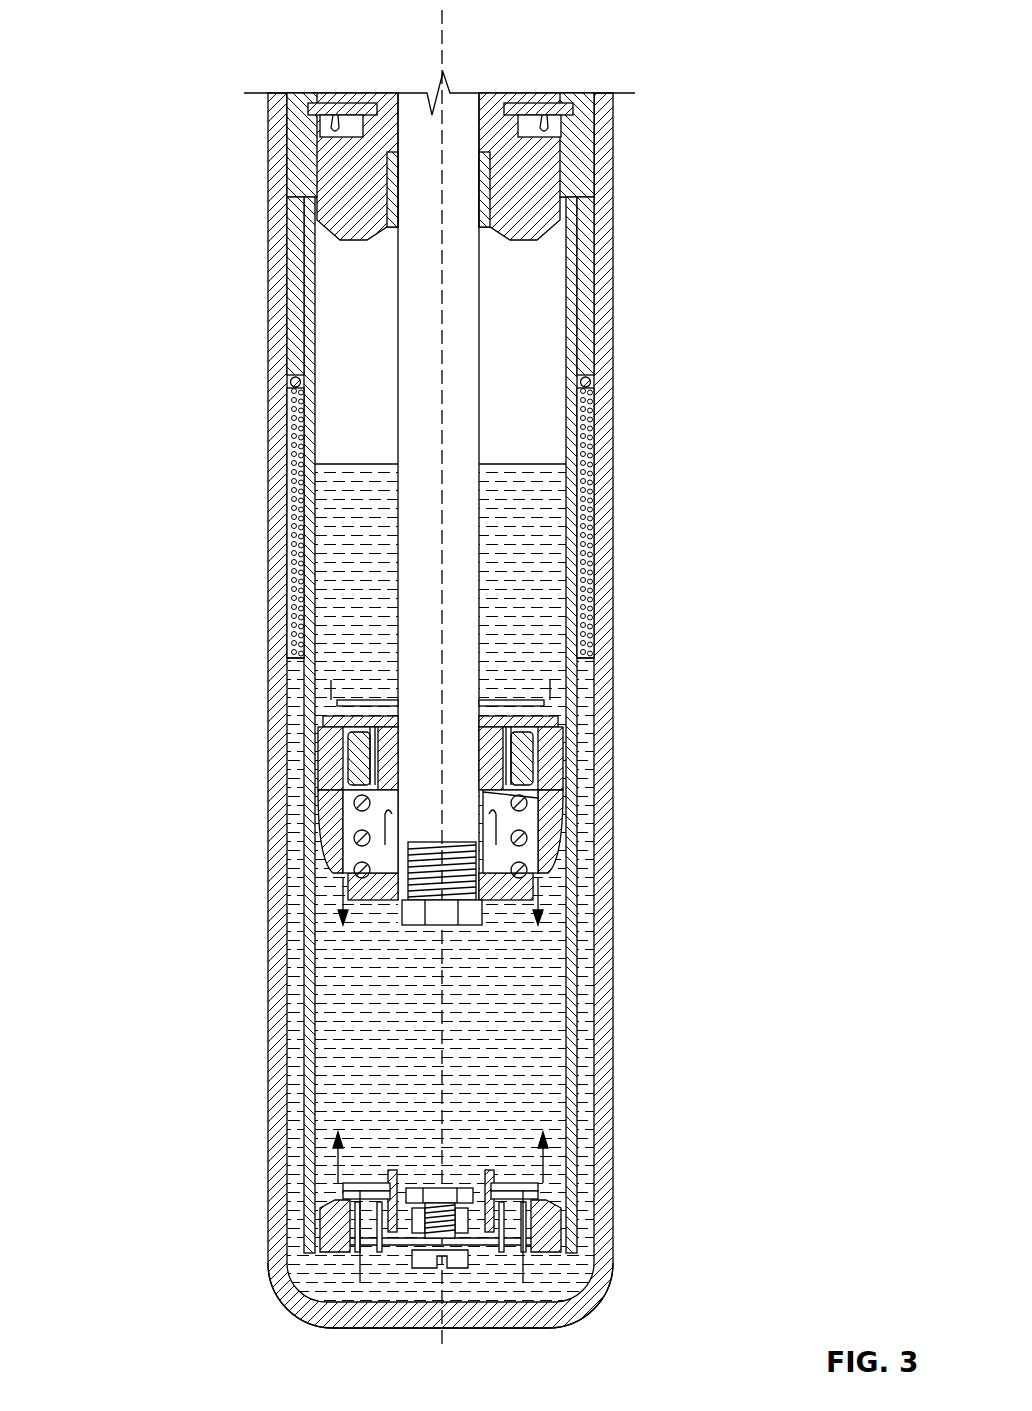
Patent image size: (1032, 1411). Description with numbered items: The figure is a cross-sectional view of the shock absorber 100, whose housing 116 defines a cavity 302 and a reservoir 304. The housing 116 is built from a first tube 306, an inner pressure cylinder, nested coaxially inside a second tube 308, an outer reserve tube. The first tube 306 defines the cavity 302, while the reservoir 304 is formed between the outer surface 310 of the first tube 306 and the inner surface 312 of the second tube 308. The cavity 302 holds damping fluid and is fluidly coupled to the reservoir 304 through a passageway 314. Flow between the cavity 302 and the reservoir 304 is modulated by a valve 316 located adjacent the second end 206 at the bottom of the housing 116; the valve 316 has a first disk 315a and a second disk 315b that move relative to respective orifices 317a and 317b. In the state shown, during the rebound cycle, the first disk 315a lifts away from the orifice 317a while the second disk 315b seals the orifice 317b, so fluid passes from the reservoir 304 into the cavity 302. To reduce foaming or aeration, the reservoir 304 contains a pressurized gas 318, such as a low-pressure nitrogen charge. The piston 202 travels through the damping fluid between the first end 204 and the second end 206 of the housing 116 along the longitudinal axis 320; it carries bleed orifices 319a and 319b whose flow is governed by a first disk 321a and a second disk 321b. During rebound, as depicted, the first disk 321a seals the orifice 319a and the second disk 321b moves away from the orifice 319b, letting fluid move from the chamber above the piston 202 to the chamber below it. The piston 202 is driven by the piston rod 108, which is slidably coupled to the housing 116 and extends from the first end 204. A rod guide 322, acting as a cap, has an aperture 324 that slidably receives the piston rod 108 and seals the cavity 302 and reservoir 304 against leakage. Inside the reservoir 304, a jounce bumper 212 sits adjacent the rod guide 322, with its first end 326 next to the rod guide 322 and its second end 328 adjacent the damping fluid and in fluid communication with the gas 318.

The shock absorber 100 is at (370, 710).
The piston rod 108 is at (465, 278).
The housing 116 is at (419, 825).
The piston 202 is at (323, 808).
The first end 204 is at (282, 105).
The second end 206 is at (600, 1260).
The jounce bumper 212 is at (295, 322).
The cavity 302 is at (540, 985).
The reservoir 304 is at (588, 752).
The first tube 306 is at (568, 1100).
The second tube 308 is at (612, 1010).
The outer surface 310 is at (570, 688).
The inner surface 312 is at (586, 648).
The passageway 314 is at (323, 1272).
The first disk 315a is at (350, 1190).
The second disk 315b is at (500, 1256).
The valve 316 is at (331, 1211).
The orifice 317a is at (350, 1238).
The orifice 317b is at (500, 1212).
The pressurized gas 318 is at (298, 473).
The orifice 319a is at (345, 777).
The orifice 319b is at (350, 767).
The longitudinal axis 320 is at (440, 53).
The first disk 321a is at (333, 715).
The second disk 321b is at (520, 800).
The rod guide 322 is at (575, 150).
The aperture 324 is at (485, 190).
The first end 326 is at (295, 190).
The second end 328 is at (290, 378).